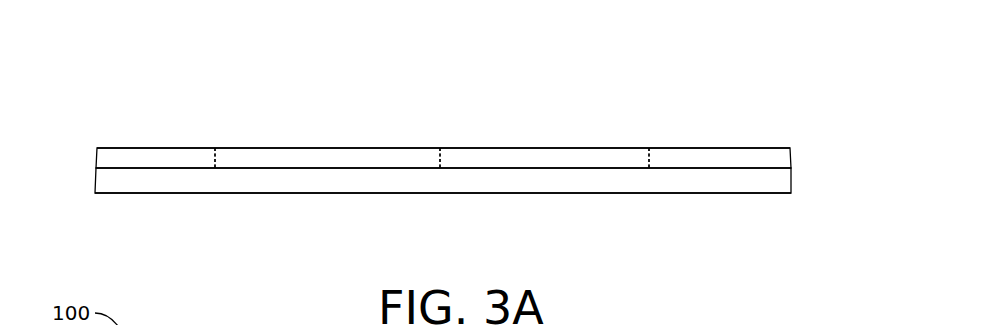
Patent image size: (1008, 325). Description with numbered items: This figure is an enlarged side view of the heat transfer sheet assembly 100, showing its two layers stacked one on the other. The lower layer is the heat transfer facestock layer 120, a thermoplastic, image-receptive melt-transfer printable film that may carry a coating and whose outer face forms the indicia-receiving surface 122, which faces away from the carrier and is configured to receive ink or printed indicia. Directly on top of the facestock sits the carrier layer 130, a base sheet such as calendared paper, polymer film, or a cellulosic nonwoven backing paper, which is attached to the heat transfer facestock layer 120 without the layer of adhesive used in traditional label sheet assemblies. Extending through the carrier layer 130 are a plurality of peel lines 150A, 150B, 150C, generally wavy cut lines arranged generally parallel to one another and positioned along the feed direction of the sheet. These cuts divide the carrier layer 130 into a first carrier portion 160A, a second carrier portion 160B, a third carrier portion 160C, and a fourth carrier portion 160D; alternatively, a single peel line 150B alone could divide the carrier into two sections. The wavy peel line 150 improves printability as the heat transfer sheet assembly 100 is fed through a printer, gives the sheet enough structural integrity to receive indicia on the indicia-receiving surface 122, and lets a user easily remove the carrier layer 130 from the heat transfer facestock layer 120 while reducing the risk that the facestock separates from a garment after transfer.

The heat transfer sheet assembly 100 is at (133, 72).
The heat transfer facestock layer 120 is at (779, 183).
The indicia-receiving surface 122 is at (255, 195).
The carrier layer 130 is at (779, 159).
The peel line 150 is at (440, 134).
The peel line 150A is at (215, 148).
The peel line 150B is at (440, 148).
The peel line 150C is at (648, 148).
The first carrier portion 160A is at (150, 155).
The second carrier portion 160B is at (310, 157).
The third carrier portion 160C is at (528, 160).
The fourth carrier portion 160D is at (736, 150).